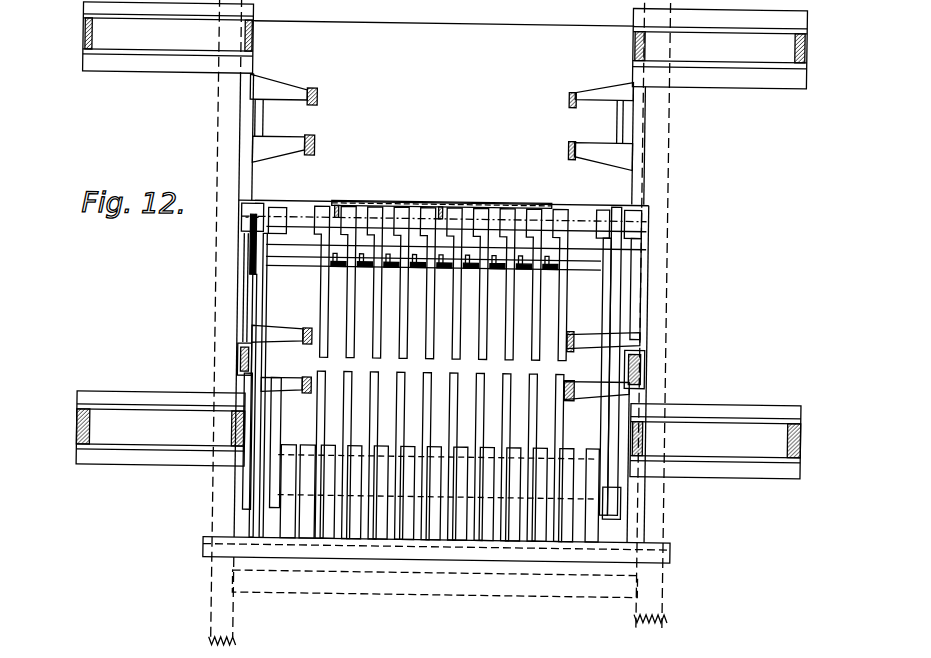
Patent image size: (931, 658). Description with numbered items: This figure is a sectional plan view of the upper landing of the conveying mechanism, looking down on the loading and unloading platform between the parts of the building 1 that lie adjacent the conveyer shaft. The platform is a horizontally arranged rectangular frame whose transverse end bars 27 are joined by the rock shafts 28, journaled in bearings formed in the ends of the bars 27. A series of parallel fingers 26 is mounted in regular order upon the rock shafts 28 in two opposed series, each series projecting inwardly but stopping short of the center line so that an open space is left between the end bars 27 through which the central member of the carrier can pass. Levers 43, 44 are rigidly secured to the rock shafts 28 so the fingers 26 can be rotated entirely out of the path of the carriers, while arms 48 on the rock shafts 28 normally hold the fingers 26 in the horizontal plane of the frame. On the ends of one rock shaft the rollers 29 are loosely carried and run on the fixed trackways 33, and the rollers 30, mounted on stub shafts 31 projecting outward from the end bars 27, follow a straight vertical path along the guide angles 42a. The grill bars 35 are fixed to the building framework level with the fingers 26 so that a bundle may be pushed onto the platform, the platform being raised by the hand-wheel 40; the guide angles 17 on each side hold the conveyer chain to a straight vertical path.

The parts of the building 1 is at (441, 326).
The guide angles 17 is at (308, 140).
The parallel fingers 26 is at (478, 215).
The transverse end bars 27 is at (258, 303).
The rock shafts 28 is at (305, 214).
The rollers 29 is at (247, 490).
The rollers 30 is at (238, 368).
The stub shafts 31 is at (614, 366).
The fixed trackways 33 is at (246, 531).
The grill bars 35 is at (308, 534).
The hand-wheel 40 is at (612, 301).
The guide angles 42a is at (678, 352).
The lever 43 is at (255, 278).
The lever 44 is at (275, 444).
The arms 48 is at (634, 438).